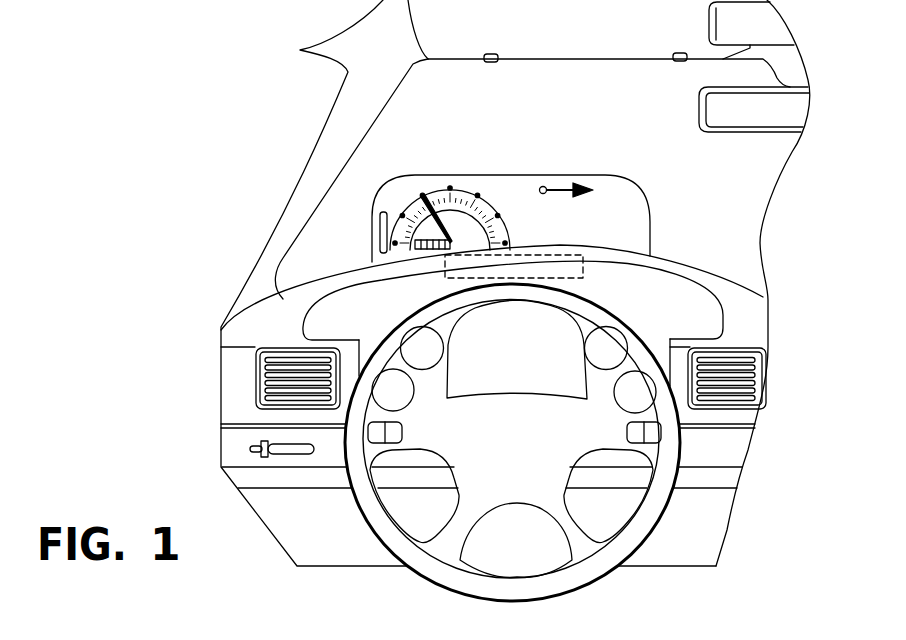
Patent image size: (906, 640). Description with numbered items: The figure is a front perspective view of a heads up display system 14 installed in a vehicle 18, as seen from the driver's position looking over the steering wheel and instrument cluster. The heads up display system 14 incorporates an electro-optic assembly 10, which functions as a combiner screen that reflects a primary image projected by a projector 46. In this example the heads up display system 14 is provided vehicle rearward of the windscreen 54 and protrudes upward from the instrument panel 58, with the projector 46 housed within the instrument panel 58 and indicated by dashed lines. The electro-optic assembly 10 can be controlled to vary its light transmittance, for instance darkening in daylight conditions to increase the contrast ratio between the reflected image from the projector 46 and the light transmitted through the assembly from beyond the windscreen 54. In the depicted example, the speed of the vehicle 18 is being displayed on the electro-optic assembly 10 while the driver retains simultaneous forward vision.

The electro-optic assembly 10 is at (549, 174).
The heads up display system 14 is at (657, 168).
The vehicle 18 is at (215, 110).
The projector 46 is at (583, 268).
The windscreen 54 is at (736, 186).
The instrument panel 58 is at (320, 275).